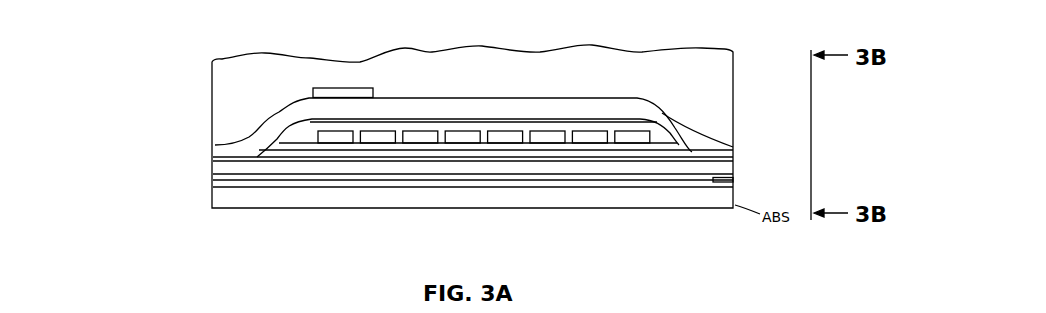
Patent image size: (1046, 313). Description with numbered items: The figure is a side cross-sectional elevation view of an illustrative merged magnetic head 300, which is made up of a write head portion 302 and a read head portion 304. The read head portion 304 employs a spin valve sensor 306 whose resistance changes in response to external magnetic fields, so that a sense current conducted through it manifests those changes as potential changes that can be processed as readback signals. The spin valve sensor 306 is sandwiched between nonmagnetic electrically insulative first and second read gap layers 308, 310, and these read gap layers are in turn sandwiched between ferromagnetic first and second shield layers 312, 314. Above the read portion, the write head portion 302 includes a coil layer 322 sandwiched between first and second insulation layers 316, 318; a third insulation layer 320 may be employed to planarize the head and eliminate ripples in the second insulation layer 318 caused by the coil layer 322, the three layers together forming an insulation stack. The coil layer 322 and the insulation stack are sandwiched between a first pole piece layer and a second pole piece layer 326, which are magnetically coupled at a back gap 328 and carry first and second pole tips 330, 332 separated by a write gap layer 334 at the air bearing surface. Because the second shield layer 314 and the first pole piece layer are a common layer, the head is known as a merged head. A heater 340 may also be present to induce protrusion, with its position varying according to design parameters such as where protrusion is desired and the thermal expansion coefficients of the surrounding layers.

The merged magnetic head 300 is at (199, 70).
The write head portion 302 is at (205, 160).
The read head portion 304 is at (178, 213).
The spin valve sensor 306 is at (735, 183).
The first read gap layer 308 is at (516, 187).
The second read gap layer 310 is at (490, 171).
The first shield layer 312 is at (565, 200).
The second shield layer 314 is at (630, 167).
The first insulation layer 316 is at (427, 148).
The second insulation layer 318 is at (657, 135).
The third insulation layer 320 is at (400, 118).
The coil layer 322 is at (502, 137).
The second pole piece layer 326 is at (573, 107).
The back gap 328 is at (237, 154).
The first pole tip 330 is at (735, 167).
The second pole tip 332 is at (733, 145).
The write gap layer 334 is at (733, 153).
The heater 340 is at (332, 87).